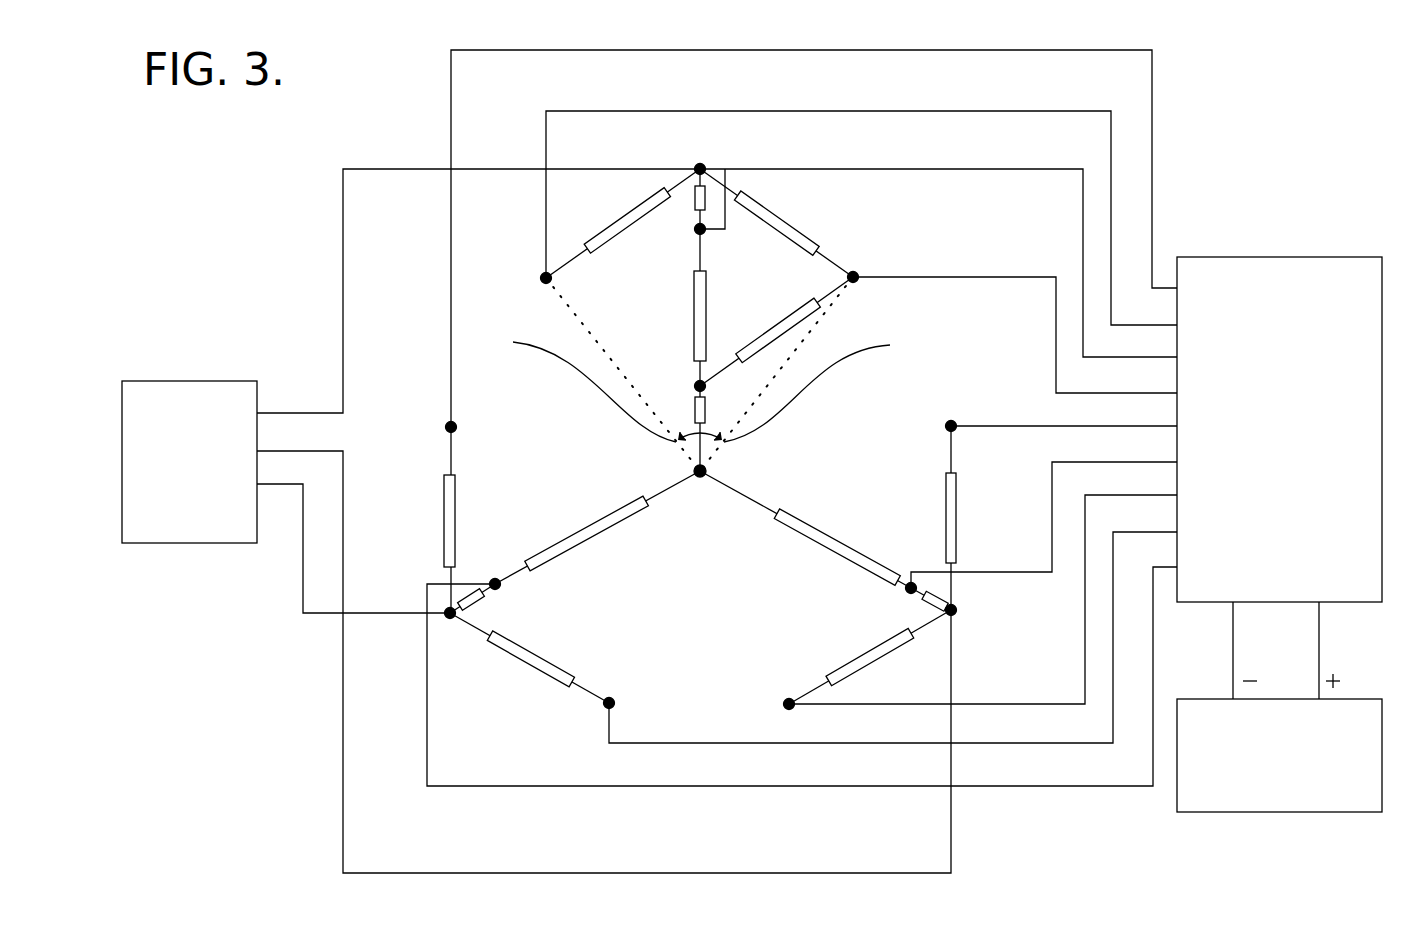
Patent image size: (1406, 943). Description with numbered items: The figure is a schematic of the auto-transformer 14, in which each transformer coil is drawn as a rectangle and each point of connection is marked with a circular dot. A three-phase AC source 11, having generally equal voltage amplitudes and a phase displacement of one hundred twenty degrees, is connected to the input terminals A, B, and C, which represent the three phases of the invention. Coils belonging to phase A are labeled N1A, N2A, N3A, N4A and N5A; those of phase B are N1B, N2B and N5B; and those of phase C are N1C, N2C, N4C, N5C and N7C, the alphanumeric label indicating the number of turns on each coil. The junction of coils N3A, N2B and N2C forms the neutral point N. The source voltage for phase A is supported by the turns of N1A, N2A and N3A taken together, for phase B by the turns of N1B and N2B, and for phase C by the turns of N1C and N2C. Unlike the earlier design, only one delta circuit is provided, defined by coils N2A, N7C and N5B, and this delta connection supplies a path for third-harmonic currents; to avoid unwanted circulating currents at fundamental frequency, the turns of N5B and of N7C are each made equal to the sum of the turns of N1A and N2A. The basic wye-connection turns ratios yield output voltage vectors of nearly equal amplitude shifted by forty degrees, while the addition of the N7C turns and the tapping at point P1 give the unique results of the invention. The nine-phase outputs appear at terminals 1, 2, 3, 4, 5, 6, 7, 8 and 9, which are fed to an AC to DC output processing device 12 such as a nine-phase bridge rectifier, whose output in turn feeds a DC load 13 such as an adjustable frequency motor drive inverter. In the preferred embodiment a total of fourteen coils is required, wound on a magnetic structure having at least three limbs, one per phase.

The nine-phase output terminal 1 is at (704, 233).
The nine-phase output terminal 2 is at (861, 261).
The nine-phase output terminal 3 is at (954, 422).
The nine-phase output terminal 4 is at (909, 592).
The nine-phase output terminal 5 is at (787, 705).
The nine-phase output terminal 6 is at (612, 700).
The nine-phase output terminal 7 is at (497, 589).
The nine-phase output terminal 8 is at (448, 428).
The nine-phase output terminal 9 is at (544, 277).
The AC source 11 is at (180, 381).
The AC to DC output processing device 12 is at (1260, 257).
The DC load 13 is at (1368, 699).
The auto-transformer 14 is at (858, 422).
The coil N1A is at (708, 193).
The coil N2A is at (695, 303).
The coil N3A is at (694, 412).
The coil N4A is at (957, 542).
The coil N5A is at (444, 493).
The coil N1B is at (928, 605).
The coil N2B is at (882, 566).
The coil N5B is at (808, 235).
The coil N1C is at (462, 600).
The coil N2C is at (580, 531).
The coil N4C is at (612, 226).
The coil N5C is at (892, 651).
The coil N7C is at (772, 332).
The phase A terminal A is at (710, 156).
The phase B terminal B is at (956, 612).
The phase C terminal C is at (450, 619).
The neutral point N is at (703, 478).
The tapping point P1 is at (706, 388).